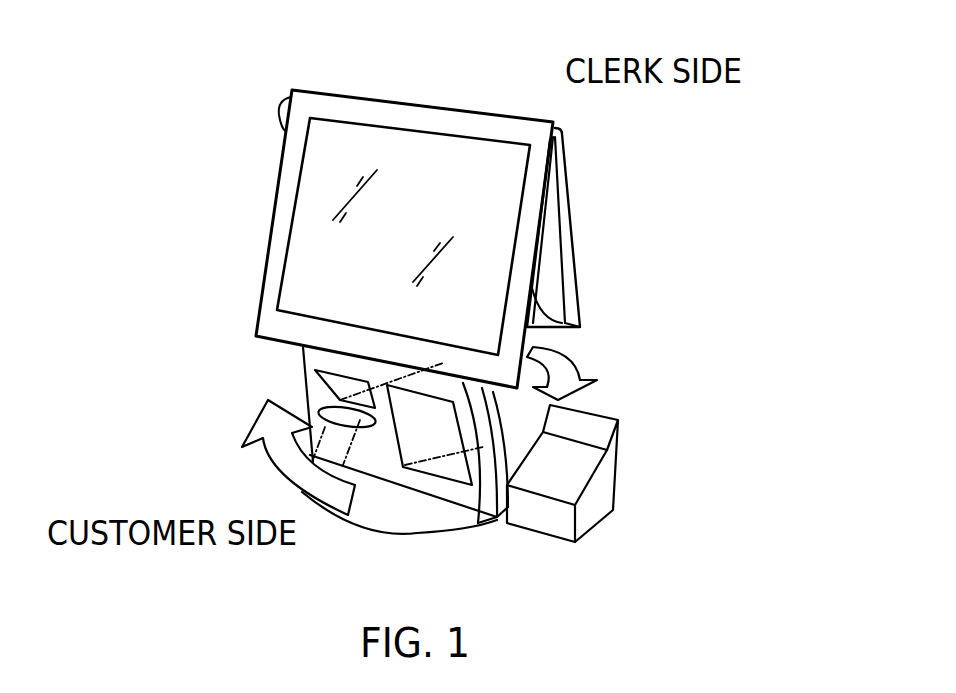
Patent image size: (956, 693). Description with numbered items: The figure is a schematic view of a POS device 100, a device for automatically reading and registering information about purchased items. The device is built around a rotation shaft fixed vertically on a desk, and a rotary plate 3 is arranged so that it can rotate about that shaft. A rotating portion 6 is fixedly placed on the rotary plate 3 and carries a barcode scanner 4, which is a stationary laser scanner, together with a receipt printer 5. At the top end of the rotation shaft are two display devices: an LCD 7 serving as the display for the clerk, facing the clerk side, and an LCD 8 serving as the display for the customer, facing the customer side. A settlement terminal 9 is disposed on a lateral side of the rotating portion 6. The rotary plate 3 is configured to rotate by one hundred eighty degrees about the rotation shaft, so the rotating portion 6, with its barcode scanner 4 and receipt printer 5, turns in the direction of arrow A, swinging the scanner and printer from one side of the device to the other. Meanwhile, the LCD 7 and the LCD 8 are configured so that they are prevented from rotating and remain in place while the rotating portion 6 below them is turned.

The POS device 100 is at (241, 56).
The LCD (display device for customer) 8 is at (280, 222).
The LCD (display device for clerk) 7 is at (577, 253).
The arrow direction A is at (572, 366).
The receipt printer 5 is at (330, 395).
The rotary plate 3 is at (437, 523).
The barcode scanner 4 is at (480, 520).
The rotating portion 6 is at (527, 442).
The settlement terminal 9 is at (604, 488).